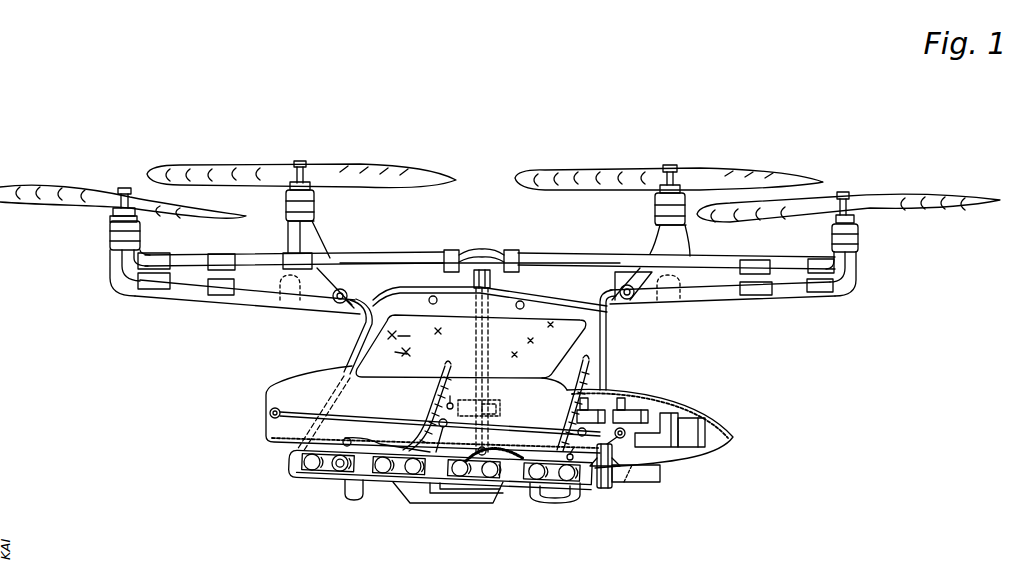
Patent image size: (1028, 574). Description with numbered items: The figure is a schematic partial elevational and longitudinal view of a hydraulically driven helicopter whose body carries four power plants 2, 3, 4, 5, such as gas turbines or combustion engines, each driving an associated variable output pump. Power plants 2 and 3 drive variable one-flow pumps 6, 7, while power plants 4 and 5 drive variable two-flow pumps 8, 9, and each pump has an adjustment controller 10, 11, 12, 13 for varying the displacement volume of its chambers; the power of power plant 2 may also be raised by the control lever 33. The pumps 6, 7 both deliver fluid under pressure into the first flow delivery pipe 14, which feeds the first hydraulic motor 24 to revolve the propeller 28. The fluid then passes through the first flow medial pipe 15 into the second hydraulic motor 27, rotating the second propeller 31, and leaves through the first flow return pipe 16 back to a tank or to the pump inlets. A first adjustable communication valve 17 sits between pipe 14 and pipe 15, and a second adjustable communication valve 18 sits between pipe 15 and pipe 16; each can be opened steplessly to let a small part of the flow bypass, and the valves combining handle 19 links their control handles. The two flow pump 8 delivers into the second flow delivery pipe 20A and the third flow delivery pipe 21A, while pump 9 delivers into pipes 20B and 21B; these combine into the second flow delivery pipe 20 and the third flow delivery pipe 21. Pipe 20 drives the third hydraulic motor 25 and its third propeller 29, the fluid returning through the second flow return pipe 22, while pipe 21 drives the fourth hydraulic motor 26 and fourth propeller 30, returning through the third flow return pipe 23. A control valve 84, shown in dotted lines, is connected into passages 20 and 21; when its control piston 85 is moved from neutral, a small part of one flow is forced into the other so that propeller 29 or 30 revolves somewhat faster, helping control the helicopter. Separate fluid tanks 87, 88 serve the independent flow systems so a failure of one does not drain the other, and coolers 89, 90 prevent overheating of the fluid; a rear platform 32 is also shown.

The power plant 2 is at (318, 475).
The power plant 3 is at (384, 478).
The power plant 4 is at (456, 484).
The power plant 5 is at (541, 486).
The variable one-flow pump 6 is at (344, 476).
The variable one-flow pump 7 is at (286, 393).
The variable two-flow pump 8 is at (418, 481).
The variable two-flow pump 9 is at (598, 490).
The adjustment controller 10 is at (374, 443).
The adjustment controller 11 is at (444, 449).
The adjustment controller 12 is at (505, 450).
The adjustment controller 13 is at (573, 444).
The first flow delivery pipe 14 is at (185, 293).
The first flow medial pipe 15 is at (192, 258).
The first flow return pipe 16 is at (788, 293).
The first adjustable communication valve 17 is at (348, 292).
The second adjustable communication valve 18 is at (619, 291).
The valves combining handle 19 is at (542, 306).
The second flow delivery pipe 20 is at (388, 256).
The third flow delivery pipe 21 is at (536, 256).
The third flow delivery pipe 21A is at (440, 503).
The third flow delivery pipe 21B is at (586, 500).
The second flow delivery pipe 20A is at (472, 504).
The second flow delivery pipe 20B is at (556, 504).
The second flow return pipe 22 is at (287, 240).
The third flow return pipe 23 is at (688, 253).
The first hydraulic motor 24 is at (118, 232).
The third hydraulic motor 25 is at (286, 199).
The fourth hydraulic motor 26 is at (662, 208).
The second hydraulic motor 27 is at (860, 239).
The propeller 28 is at (50, 201).
The third propeller 29 is at (412, 188).
The fourth propeller 30 is at (562, 189).
The second propeller 31 is at (910, 211).
The rear platform 32 is at (648, 482).
The control lever 33 is at (343, 440).
The control valve 84 is at (500, 411).
The control piston 85 is at (459, 393).
The fluid tank 87 is at (596, 411).
The fluid tank 88 is at (627, 411).
The cooler 89 is at (662, 426).
The cooler 90 is at (700, 431).